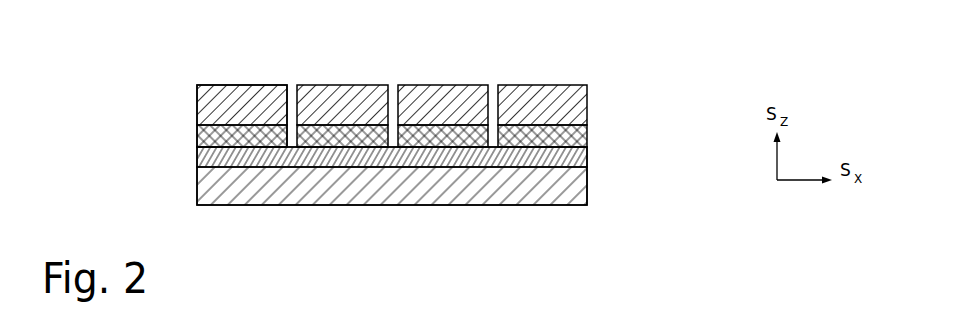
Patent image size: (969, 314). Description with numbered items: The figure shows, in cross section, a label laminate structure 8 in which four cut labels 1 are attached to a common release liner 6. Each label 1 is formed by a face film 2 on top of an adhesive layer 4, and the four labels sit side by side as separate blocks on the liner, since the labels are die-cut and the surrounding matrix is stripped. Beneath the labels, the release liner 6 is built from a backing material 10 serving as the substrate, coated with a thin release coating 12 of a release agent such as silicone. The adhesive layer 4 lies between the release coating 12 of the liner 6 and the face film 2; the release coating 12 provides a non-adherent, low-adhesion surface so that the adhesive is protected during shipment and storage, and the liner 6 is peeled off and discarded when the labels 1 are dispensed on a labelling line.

The label 1 is at (286, 83).
The face film 2 is at (589, 107).
The adhesive layer 4 is at (589, 136).
The release liner 6 is at (183, 148).
The label laminate structure 8 is at (437, 50).
The backing material 10 is at (589, 196).
The release coating 12 is at (589, 163).